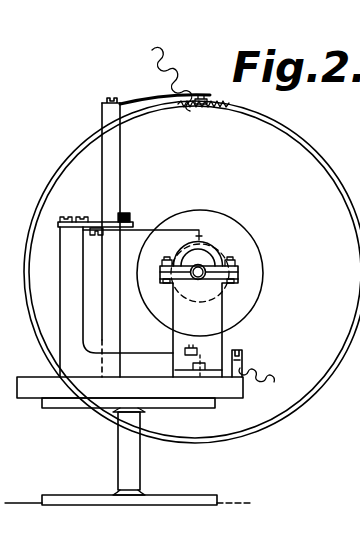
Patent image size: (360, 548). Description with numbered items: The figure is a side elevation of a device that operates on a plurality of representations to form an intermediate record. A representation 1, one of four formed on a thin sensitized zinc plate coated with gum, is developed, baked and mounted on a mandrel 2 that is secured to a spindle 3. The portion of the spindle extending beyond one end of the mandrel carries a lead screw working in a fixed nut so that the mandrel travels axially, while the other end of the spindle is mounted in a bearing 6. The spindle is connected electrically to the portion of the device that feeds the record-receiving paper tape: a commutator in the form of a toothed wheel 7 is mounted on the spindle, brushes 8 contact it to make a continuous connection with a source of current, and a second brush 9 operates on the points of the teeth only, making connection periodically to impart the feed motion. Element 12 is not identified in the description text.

The representation 1 is at (217, 246).
The mandrel 2 is at (223, 289).
The spindle 3 is at (236, 261).
The bearing 6 is at (212, 329).
The toothed wheel 7 is at (298, 141).
The brushes 8 is at (245, 361).
The second brush 9 is at (204, 95).
The ring rim 12 is at (359, 124).